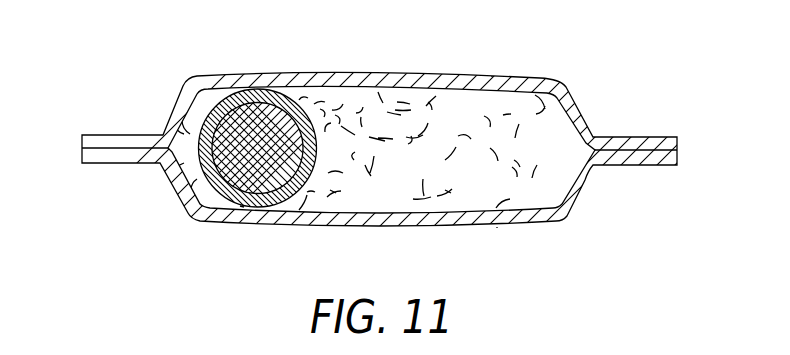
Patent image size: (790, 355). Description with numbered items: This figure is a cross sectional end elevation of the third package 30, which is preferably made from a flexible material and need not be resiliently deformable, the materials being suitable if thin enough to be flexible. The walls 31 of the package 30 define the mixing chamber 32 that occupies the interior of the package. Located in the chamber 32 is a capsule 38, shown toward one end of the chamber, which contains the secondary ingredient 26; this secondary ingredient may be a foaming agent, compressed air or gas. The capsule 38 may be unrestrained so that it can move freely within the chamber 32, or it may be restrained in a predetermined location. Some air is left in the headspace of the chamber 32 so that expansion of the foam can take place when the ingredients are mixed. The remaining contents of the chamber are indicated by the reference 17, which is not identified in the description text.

The package 30 is at (113, 50).
The walls 31 is at (492, 76).
The secondary ingredient 26 is at (239, 100).
The mixing chamber 32 is at (402, 103).
The capsule 38 is at (242, 208).
The sealing material 17 is at (333, 192).